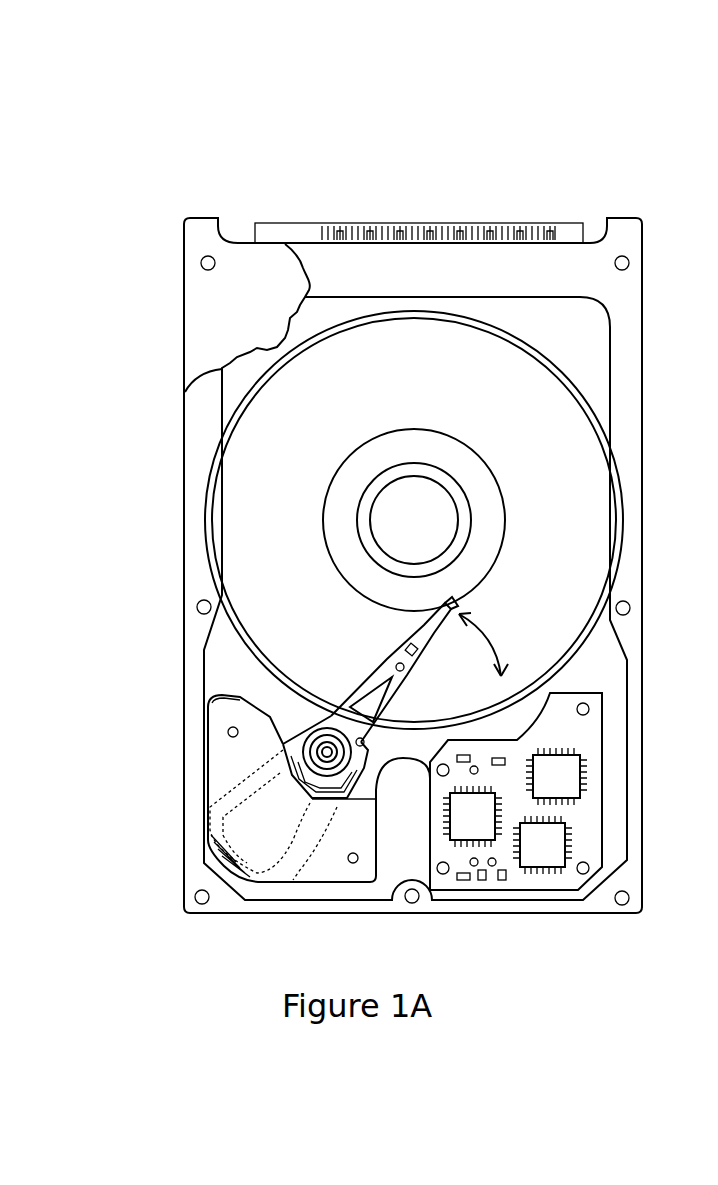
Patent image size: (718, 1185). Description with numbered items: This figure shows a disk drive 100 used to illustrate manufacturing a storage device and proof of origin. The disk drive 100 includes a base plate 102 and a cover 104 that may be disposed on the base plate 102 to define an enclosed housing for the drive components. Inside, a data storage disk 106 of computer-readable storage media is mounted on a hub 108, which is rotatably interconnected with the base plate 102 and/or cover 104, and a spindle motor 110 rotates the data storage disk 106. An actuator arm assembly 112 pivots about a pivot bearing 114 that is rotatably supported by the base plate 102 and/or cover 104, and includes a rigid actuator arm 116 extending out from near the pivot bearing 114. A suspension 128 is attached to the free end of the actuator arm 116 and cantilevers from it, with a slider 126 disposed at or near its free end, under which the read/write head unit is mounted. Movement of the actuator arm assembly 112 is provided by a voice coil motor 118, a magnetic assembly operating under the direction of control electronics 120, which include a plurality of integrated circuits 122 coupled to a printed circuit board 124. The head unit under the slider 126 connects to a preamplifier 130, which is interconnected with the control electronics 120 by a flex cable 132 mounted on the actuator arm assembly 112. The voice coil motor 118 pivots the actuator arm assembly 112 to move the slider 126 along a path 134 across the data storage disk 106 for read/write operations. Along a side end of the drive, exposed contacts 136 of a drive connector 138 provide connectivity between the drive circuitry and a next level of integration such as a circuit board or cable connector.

The disk drive 100 is at (162, 158).
The base plate 102 is at (204, 574).
The cover 104 is at (238, 309).
The data storage disk 106 is at (302, 432).
The hub 108 is at (326, 485).
The spindle motor 110 is at (393, 531).
The actuator arm assembly 112 is at (403, 742).
The pivot bearing 114 is at (288, 746).
The actuator arm 116 is at (232, 697).
The voice coil motor 118 is at (196, 823).
The control electronics 120 is at (598, 918).
The integrated circuit 122 is at (560, 774).
The printed circuit board 124 is at (582, 824).
The slider 126 is at (450, 603).
The suspension 128 is at (410, 636).
The preamplifier 130 is at (402, 775).
The flex cable 132 is at (372, 800).
The path 134 is at (491, 665).
The exposed contacts 136 is at (553, 224).
The drive connector 138 is at (262, 232).